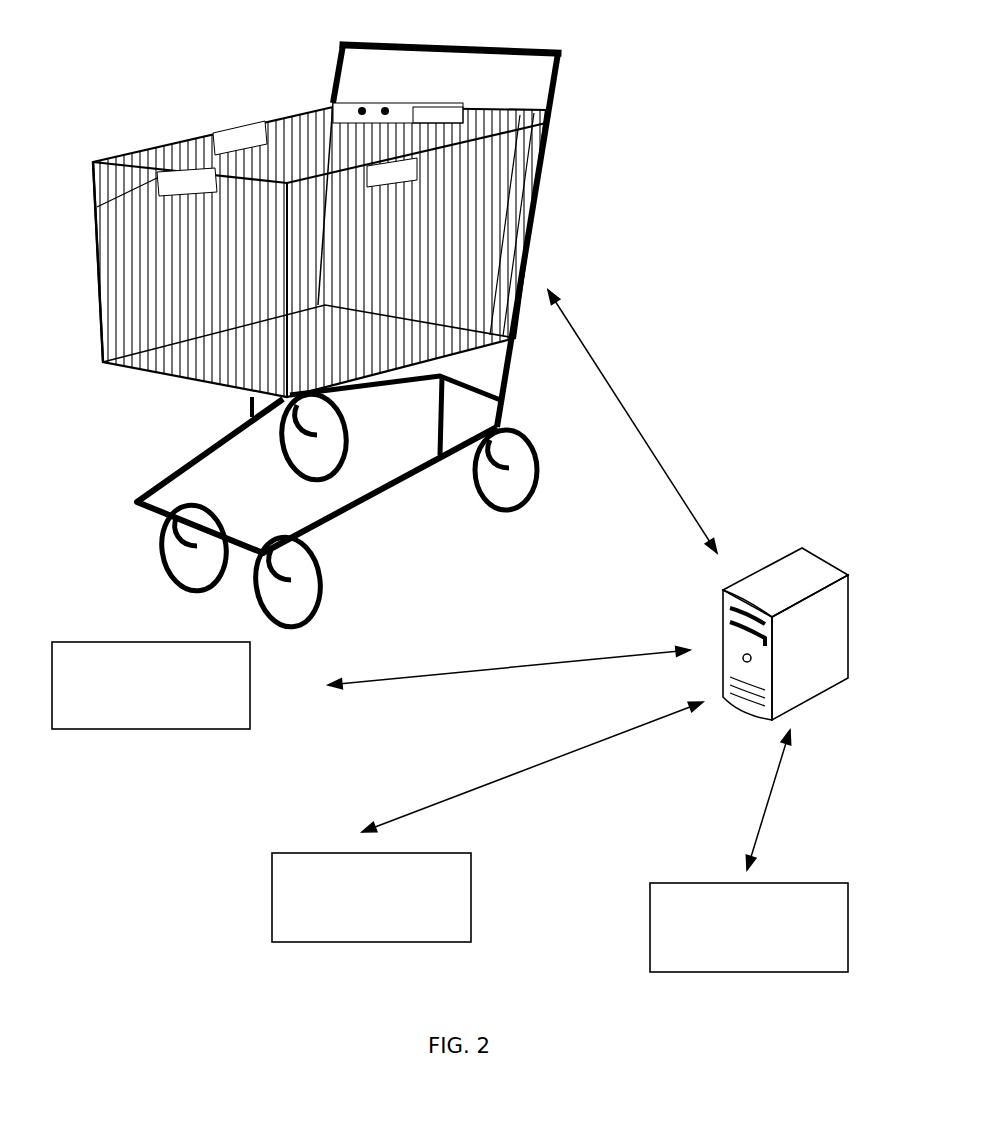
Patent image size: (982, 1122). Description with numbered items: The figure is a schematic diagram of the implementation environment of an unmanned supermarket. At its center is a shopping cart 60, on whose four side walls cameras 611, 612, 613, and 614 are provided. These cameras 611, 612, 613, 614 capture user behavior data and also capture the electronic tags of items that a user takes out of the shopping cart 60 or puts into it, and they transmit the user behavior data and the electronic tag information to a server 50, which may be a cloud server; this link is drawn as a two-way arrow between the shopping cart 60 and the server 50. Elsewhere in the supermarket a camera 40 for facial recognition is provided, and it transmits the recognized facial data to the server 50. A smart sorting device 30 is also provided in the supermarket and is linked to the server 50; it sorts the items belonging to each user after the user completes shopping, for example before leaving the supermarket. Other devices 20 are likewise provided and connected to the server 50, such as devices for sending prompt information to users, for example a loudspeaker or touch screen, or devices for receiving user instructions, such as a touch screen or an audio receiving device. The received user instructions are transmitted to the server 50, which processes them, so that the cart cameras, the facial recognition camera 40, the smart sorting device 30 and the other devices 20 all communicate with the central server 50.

The shopping cart 60 is at (352, 323).
The camera 611 is at (443, 105).
The camera 612 is at (537, 217).
The camera 613 is at (97, 206).
The camera 614 is at (253, 133).
The server 50 is at (828, 560).
The other devices 20 is at (147, 729).
The smart sorting device 30 is at (747, 972).
The camera for facial recognition 40 is at (380, 942).